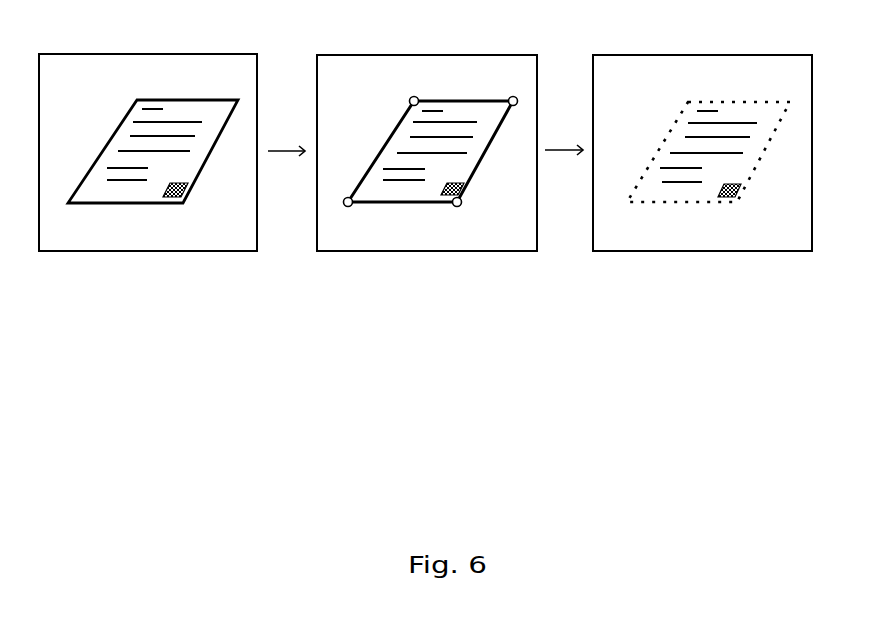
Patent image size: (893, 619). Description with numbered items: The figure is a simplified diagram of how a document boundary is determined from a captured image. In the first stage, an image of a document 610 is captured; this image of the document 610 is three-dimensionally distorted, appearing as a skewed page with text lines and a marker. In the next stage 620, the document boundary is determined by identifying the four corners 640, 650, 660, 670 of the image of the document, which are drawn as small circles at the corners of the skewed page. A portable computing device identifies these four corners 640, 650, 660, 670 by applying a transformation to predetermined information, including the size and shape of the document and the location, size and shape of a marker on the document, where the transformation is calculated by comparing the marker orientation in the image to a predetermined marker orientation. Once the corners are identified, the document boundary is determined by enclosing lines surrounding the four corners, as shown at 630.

The image of a document 610 is at (112, 260).
The corner identification stage 620 is at (402, 172).
The document boundary determination 630 is at (668, 260).
The first corner 640 is at (412, 97).
The second corner 650 is at (507, 91).
The third corner 660 is at (335, 197).
The fourth corner 670 is at (464, 207).